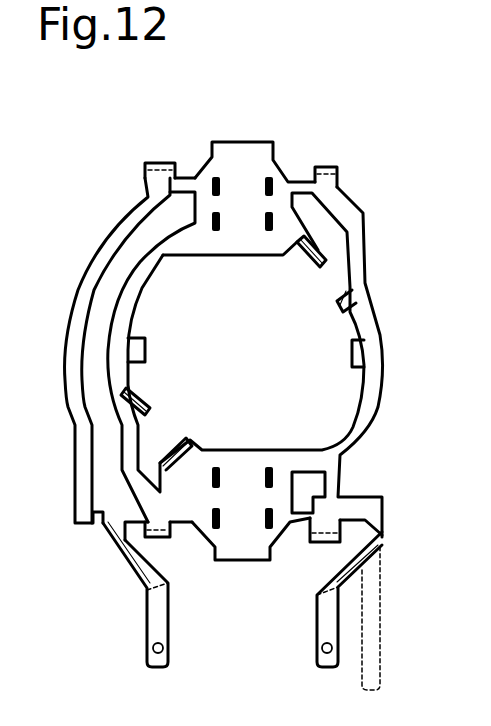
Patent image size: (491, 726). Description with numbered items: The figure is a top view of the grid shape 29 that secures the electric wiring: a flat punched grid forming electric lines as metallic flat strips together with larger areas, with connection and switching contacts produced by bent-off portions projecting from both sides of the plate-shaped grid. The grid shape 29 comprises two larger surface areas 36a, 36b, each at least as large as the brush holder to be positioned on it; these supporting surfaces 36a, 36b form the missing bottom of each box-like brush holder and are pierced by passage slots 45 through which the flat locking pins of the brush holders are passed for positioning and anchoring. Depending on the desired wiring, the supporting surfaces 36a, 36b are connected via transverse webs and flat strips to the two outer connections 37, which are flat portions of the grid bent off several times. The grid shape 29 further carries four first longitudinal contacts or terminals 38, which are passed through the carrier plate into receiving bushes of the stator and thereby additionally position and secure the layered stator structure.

The grid shape 29 is at (370, 265).
The brush-holder supporting surface 36a is at (267, 147).
The brush-holder supporting surface 36b is at (240, 553).
The outer connections 37 is at (148, 662).
The first longitudinal contacts or terminals 38 is at (160, 163).
The passage slots 45 is at (268, 177).